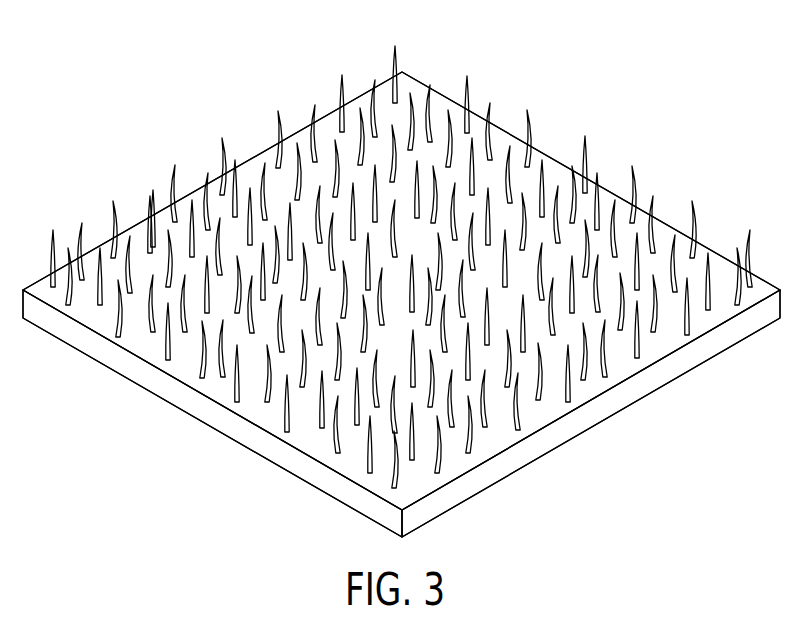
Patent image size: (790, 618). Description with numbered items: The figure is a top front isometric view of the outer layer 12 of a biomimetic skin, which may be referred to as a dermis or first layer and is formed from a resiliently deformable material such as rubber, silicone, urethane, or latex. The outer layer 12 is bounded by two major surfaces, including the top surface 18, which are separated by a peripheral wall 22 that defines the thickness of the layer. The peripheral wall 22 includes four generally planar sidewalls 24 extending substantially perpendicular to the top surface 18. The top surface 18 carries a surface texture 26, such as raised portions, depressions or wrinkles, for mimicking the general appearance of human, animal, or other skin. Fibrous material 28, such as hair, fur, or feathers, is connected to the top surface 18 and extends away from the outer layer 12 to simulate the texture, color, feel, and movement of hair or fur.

The outer layer 12 is at (160, 117).
The top surface 18 is at (535, 422).
The peripheral wall 22 is at (700, 353).
The sidewalls 24 is at (247, 432).
The surface texture 26 is at (557, 167).
The fibrous material 28 is at (693, 231).